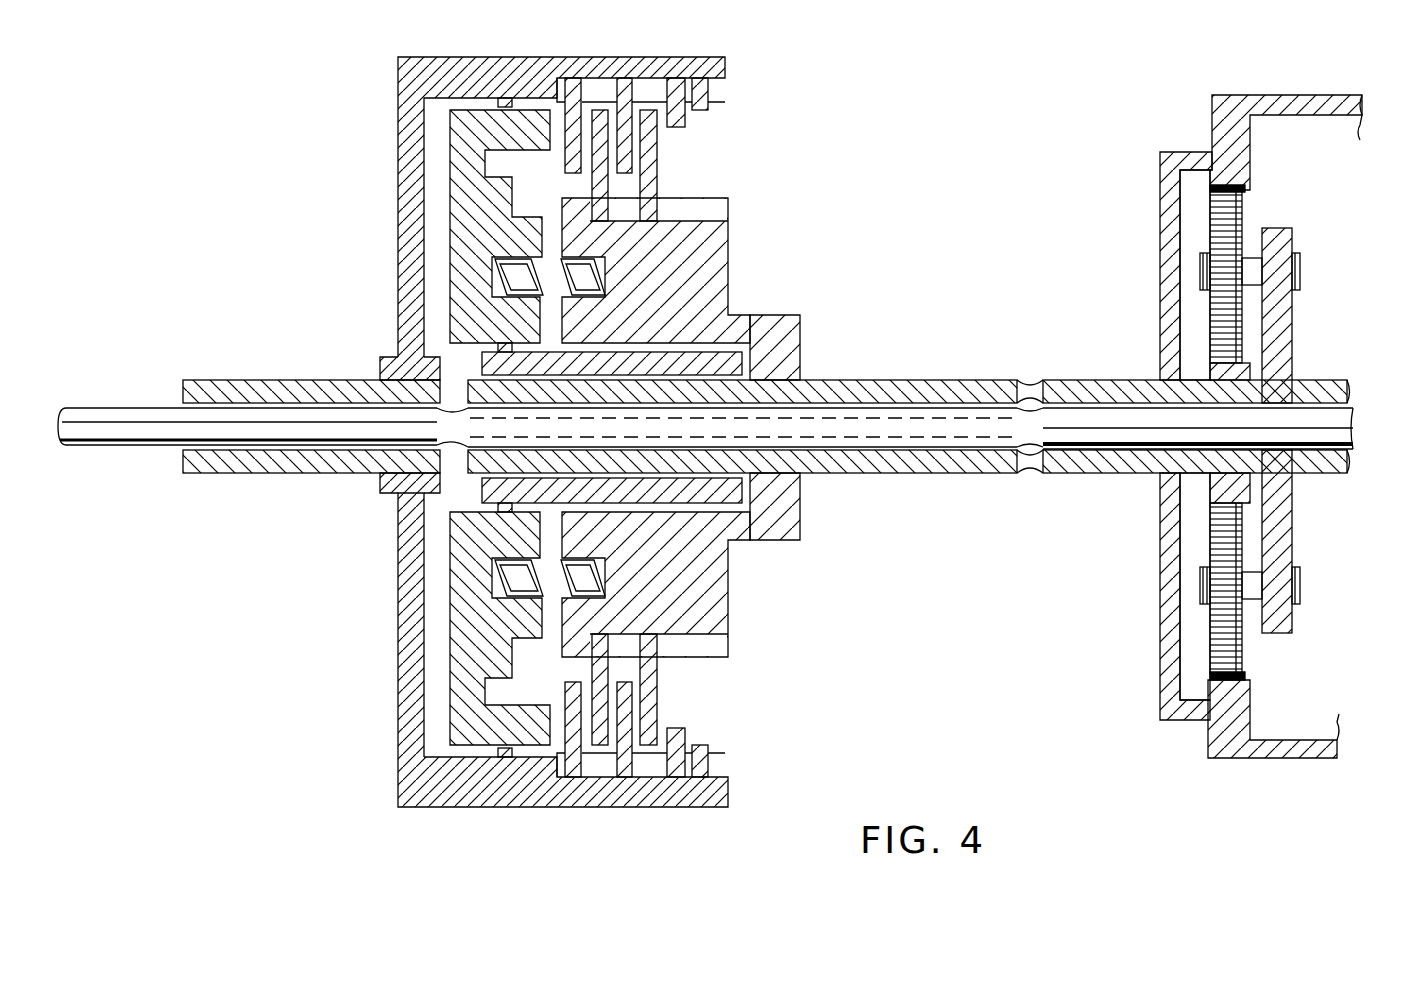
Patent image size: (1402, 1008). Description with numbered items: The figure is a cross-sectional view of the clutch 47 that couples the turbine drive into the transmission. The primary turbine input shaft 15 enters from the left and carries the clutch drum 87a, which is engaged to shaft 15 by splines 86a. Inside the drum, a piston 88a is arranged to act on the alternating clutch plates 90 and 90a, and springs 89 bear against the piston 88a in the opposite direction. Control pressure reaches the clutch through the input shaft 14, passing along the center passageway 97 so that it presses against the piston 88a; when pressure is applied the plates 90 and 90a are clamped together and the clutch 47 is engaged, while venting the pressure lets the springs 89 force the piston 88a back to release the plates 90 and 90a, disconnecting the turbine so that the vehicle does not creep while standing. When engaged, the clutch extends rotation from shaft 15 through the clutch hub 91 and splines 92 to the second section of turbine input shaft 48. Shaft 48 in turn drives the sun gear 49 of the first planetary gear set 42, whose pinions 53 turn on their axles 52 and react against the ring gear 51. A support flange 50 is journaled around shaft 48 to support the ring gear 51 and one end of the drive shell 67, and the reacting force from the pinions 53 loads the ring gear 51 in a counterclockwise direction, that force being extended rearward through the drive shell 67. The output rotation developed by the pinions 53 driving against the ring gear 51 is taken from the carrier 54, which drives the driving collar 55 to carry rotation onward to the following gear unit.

The input shaft 14 is at (128, 410).
The primary turbine input shaft 15 is at (240, 380).
The first planetary gear set 42 is at (1229, 773).
The clutch 47 is at (498, 810).
The turbine input shaft 48 is at (868, 380).
The sun gear 49 is at (1187, 503).
The support flange 50 is at (1157, 575).
The ring gear 51 is at (1247, 676).
The axles 52 is at (1200, 582).
The pinions 53 is at (1190, 650).
The carrier 54 is at (1283, 636).
The driving collar 55 is at (1322, 382).
The drive shell 67 is at (1330, 98).
The splines 86a is at (378, 475).
The clutch drum 87a is at (396, 568).
The piston 88a is at (448, 664).
The springs 89 is at (495, 278).
The clutch plates 90 is at (573, 176).
The clutch plates 90a is at (657, 152).
The clutch hub 91 is at (722, 258).
The splines 92 is at (798, 470).
The center passageway 97 is at (925, 432).